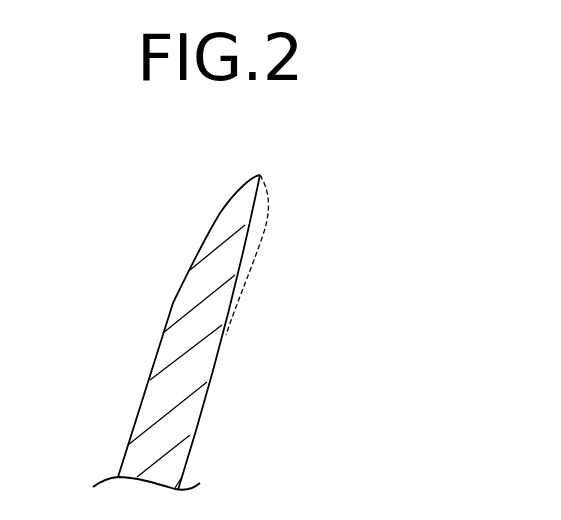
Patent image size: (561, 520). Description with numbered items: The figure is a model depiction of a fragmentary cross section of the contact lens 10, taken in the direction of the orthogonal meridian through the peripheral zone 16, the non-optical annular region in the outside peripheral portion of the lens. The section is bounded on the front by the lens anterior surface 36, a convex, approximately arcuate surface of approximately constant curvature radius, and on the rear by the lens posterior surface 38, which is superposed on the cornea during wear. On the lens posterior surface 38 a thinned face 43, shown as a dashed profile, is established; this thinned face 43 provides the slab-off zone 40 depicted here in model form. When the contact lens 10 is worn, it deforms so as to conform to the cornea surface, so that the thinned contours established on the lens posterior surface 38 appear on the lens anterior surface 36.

The contact lens 10 is at (235, 314).
The peripheral zone 16 is at (168, 392).
The lens anterior surface 36 is at (173, 303).
The lens posterior surface 38 is at (190, 443).
The slab-off zone 40 is at (228, 232).
The thinned face 43 is at (243, 248).